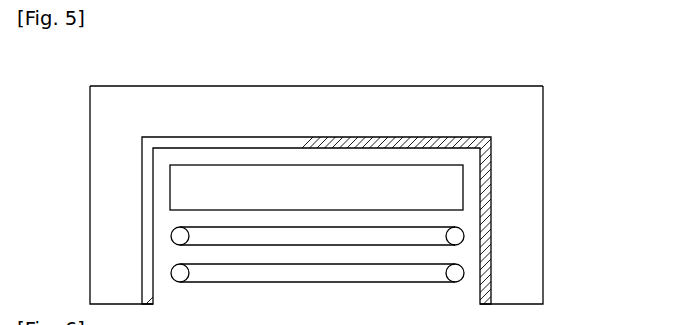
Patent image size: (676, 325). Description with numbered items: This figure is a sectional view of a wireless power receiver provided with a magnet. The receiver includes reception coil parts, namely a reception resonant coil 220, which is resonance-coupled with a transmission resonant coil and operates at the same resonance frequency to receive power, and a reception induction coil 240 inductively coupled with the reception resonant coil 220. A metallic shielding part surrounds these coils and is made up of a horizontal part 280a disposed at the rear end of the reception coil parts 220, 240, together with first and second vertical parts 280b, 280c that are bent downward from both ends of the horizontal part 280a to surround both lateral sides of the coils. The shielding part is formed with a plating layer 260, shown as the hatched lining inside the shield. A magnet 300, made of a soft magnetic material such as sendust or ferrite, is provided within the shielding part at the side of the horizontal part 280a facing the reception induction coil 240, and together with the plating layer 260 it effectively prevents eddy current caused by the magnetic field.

The magnet 300 is at (275, 138).
The plating layer 260 is at (395, 138).
The horizontal part 280a is at (462, 98).
The first vertical part 280b is at (100, 220).
The second vertical part 280c is at (535, 289).
The reception induction coil 240 is at (463, 230).
The reception resonant coil 220 is at (463, 272).